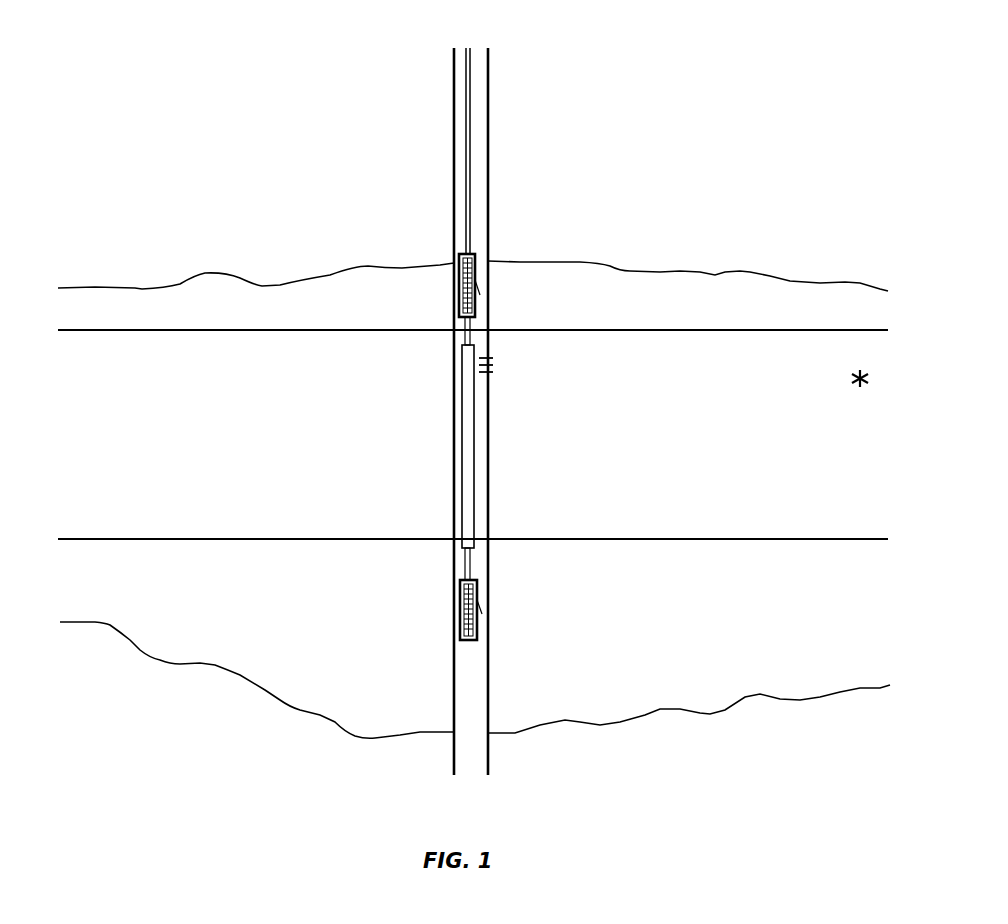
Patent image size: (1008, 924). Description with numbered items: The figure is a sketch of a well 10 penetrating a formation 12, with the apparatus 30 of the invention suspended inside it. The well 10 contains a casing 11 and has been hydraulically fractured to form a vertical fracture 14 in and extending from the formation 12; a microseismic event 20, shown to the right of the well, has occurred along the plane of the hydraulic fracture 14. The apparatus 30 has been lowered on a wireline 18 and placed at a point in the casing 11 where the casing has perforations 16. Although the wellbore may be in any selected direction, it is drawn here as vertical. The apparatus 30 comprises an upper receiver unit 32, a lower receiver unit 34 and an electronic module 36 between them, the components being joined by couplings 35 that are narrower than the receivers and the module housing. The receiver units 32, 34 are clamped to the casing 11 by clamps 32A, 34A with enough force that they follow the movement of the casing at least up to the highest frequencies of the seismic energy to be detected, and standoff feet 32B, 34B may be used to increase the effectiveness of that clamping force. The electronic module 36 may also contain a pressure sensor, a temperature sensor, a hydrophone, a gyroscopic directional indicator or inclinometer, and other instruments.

The well 10 is at (504, 105).
The casing 11 is at (489, 168).
The formation 12 is at (473, 400).
The vertical fracture 14 is at (275, 700).
The perforations 16 is at (493, 367).
The wireline 18 is at (466, 210).
The microseismic event 20 is at (851, 372).
The apparatus 30 is at (446, 401).
The receiver unit 32 is at (489, 258).
The clamp 32A is at (479, 291).
The standoff feet 32B is at (460, 270).
The receiver unit 34 is at (479, 641).
The clamp 34A is at (480, 610).
The standoff feet 34B is at (460, 596).
The couplings 35 is at (470, 331).
The electronic module 36 is at (474, 468).